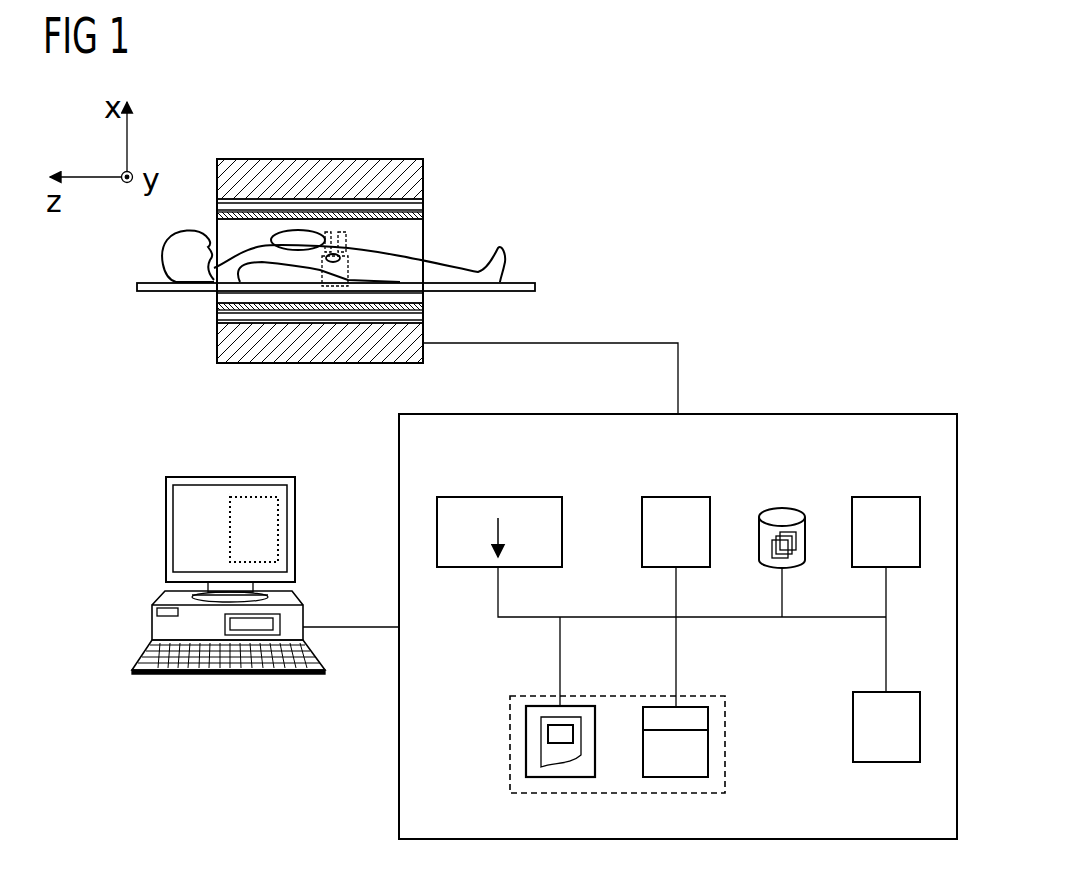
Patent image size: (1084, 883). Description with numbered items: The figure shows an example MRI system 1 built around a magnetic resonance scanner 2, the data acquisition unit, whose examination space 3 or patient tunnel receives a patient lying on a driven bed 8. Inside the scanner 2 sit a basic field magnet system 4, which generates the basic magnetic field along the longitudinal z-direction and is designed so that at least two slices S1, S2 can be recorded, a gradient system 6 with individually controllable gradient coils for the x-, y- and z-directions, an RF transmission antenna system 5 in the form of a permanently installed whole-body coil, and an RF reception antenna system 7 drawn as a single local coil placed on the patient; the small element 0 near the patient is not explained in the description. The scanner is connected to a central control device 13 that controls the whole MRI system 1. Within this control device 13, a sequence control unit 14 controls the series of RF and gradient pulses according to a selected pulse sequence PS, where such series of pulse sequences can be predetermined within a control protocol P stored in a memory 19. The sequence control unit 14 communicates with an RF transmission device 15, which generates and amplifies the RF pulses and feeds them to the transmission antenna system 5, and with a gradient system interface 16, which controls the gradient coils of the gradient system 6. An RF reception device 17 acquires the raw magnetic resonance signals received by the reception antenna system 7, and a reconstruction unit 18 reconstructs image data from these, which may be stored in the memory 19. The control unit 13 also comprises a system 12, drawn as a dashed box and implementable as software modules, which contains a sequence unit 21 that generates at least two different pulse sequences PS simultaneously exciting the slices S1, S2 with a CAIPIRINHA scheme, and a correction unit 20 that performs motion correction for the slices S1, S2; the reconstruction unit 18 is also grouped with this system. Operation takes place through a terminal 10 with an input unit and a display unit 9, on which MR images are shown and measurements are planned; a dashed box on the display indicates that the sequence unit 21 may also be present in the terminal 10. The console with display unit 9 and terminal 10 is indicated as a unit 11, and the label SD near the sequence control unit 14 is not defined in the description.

The MRI system 1 is at (774, 176).
The magnetic resonance scanner 2 is at (412, 136).
The examination space 3 is at (410, 240).
The basic field magnet system 4 is at (417, 168).
The RF transmission antenna system 5 is at (217, 210).
The gradient system 6 is at (417, 203).
The RF reception antenna system 7 is at (297, 232).
The driven bed 8 is at (537, 287).
The sensor / patient body 0 is at (336, 262).
The first slice S1 is at (328, 231).
The second slice S2 is at (341, 231).
The display unit 9 is at (231, 476).
The terminal 10 is at (228, 673).
The terminal / console 11 is at (147, 494).
The system 12 is at (620, 692).
The central control device 13 is at (797, 413).
The sequence control unit 14 is at (498, 496).
The RF transmission device 15 is at (676, 496).
The gradient system interface 16 is at (852, 727).
The RF reception device 17 is at (886, 496).
The reconstruction unit 18 is at (708, 752).
The memory 19 is at (782, 505).
The correction unit 20 is at (702, 718).
The sequence unit 21 is at (278, 522).
The control protocol P is at (768, 567).
The pulse sequence PS is at (560, 718).
The sensor data SD is at (500, 536).